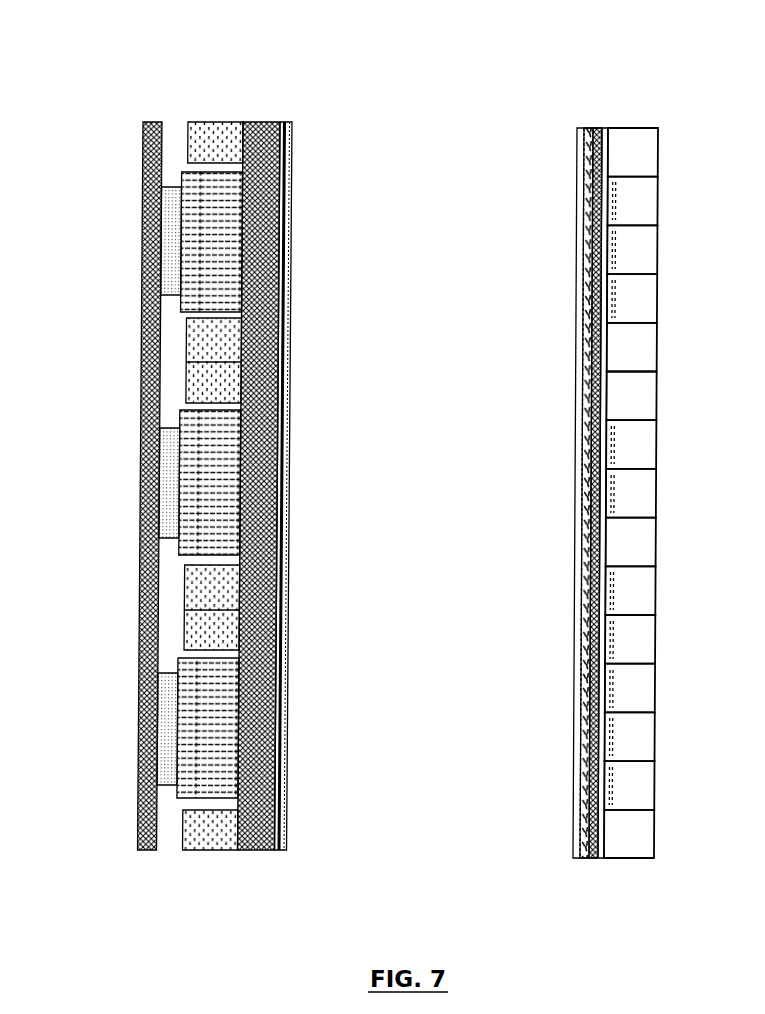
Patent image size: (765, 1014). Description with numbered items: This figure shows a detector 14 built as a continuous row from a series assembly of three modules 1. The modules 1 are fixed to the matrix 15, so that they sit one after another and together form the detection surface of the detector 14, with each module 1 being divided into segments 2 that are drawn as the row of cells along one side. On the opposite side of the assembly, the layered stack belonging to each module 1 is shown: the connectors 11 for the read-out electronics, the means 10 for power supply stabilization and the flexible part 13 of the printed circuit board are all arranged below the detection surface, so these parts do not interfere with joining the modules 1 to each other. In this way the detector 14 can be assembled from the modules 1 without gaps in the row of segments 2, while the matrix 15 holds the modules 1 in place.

The module 1 is at (292, 247).
The segment 2 is at (631, 493).
The means for power supply stabilization 10 is at (267, 125).
The connector for the read-out electronics 11 is at (143, 492).
The flexible part of the printed circuit board 13 is at (212, 193).
The detector 14 is at (370, 210).
The matrix 15 is at (202, 850).